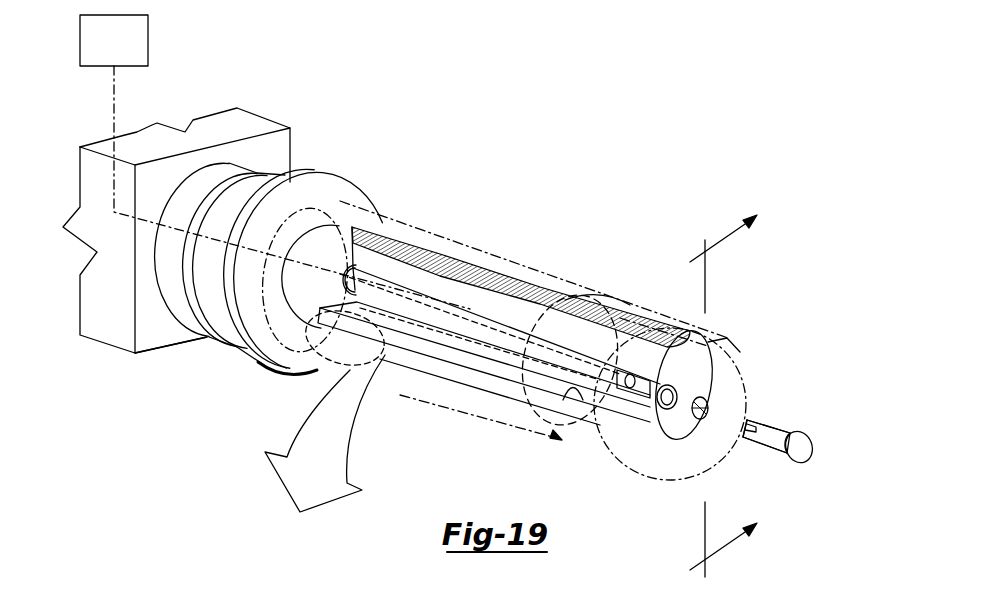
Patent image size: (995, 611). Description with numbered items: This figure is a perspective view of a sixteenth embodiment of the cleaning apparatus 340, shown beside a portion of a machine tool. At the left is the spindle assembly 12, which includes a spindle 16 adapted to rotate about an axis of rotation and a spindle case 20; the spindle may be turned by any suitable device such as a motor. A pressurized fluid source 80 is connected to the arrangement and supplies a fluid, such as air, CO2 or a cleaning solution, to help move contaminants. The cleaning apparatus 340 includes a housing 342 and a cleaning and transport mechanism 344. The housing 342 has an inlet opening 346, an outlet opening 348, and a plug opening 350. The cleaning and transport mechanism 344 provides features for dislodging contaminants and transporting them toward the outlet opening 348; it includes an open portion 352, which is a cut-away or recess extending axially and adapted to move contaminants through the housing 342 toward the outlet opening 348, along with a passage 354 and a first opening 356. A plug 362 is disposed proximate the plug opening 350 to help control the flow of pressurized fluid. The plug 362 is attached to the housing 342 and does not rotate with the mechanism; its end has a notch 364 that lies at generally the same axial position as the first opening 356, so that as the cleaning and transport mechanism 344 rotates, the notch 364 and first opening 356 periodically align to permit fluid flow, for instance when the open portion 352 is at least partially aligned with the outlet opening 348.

The spindle assembly 12 is at (75, 262).
The spindle 16 is at (227, 195).
The spindle case 20 is at (120, 343).
The pressurized fluid source 80 is at (148, 34).
The cleaning apparatus 340 is at (570, 223).
The housing 342 is at (492, 420).
The cleaning and transport mechanism 344 is at (557, 445).
The inlet opening 346 is at (647, 316).
The outlet opening 348 is at (384, 380).
The plug opening 350 is at (703, 410).
The open portion 352 is at (450, 346).
The passage 354 is at (388, 307).
The first opening 356 is at (630, 384).
The plug 362 is at (797, 456).
The notch 364 is at (776, 422).